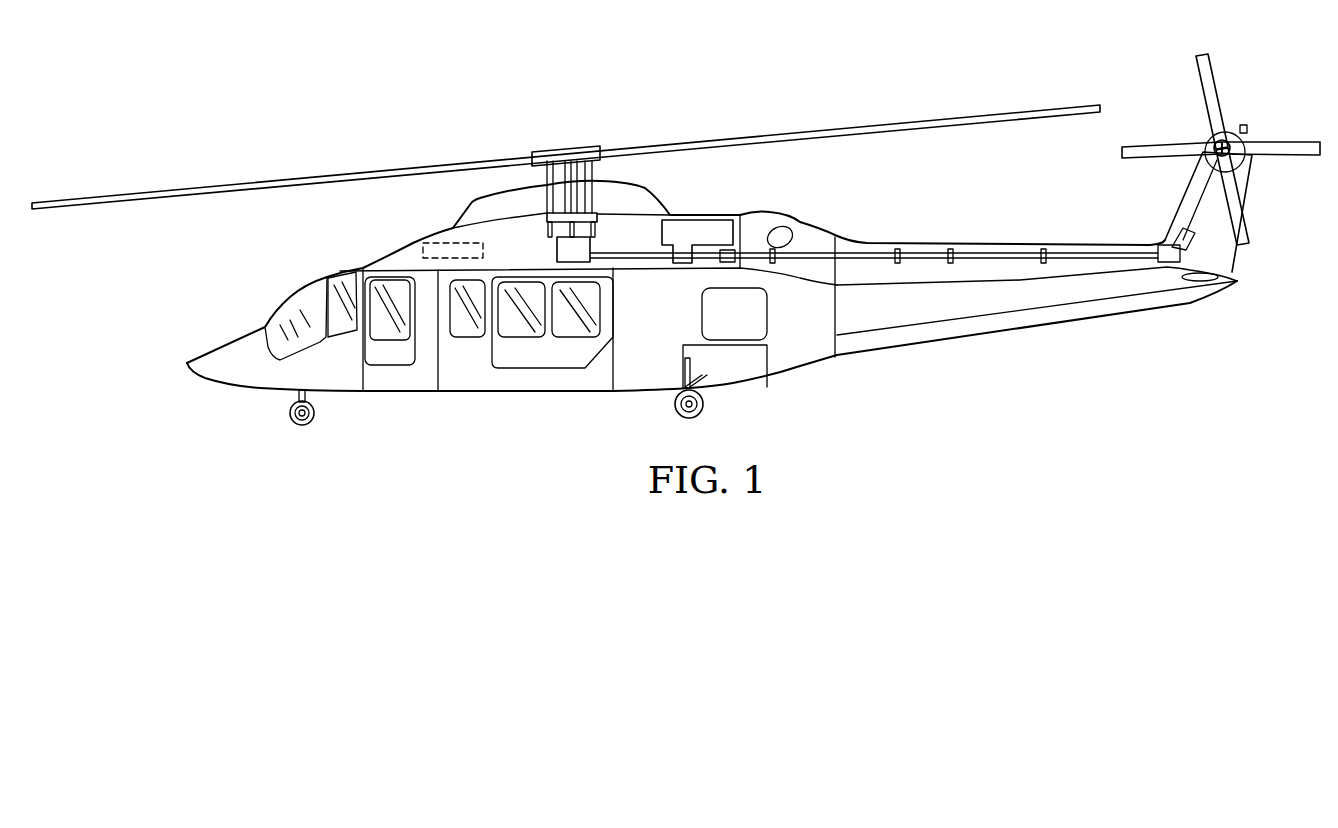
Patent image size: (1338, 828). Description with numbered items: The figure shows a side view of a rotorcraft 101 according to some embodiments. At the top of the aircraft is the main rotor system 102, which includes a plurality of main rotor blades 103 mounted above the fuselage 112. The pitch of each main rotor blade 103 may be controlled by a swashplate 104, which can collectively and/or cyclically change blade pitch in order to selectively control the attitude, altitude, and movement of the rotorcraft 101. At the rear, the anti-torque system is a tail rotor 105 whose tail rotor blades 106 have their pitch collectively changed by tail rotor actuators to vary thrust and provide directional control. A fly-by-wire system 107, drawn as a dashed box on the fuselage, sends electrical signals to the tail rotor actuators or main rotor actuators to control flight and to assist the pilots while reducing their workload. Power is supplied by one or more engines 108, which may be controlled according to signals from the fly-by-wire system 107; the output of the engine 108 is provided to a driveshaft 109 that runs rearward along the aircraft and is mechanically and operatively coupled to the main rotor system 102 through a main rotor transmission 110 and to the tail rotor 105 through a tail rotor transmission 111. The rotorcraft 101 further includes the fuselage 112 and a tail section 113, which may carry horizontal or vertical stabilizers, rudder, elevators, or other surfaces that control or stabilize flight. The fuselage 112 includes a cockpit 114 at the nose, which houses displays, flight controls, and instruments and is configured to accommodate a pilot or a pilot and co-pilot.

The rotorcraft 101 is at (418, 107).
The main rotor system 102 is at (596, 132).
The main rotor blade 103 is at (298, 173).
The swashplate 104 is at (598, 215).
The tail rotor 105 is at (1255, 120).
The tail rotor blade 106 is at (1287, 158).
The fly-by-wire system 107 is at (422, 250).
The engine 108 is at (720, 228).
The driveshaft 109 is at (643, 253).
The main rotor transmission 110 is at (556, 246).
The tail rotor transmission 111 is at (1178, 108).
The fuselage 112 is at (548, 391).
The tail section 113 is at (1060, 323).
The cockpit 114 is at (297, 297).